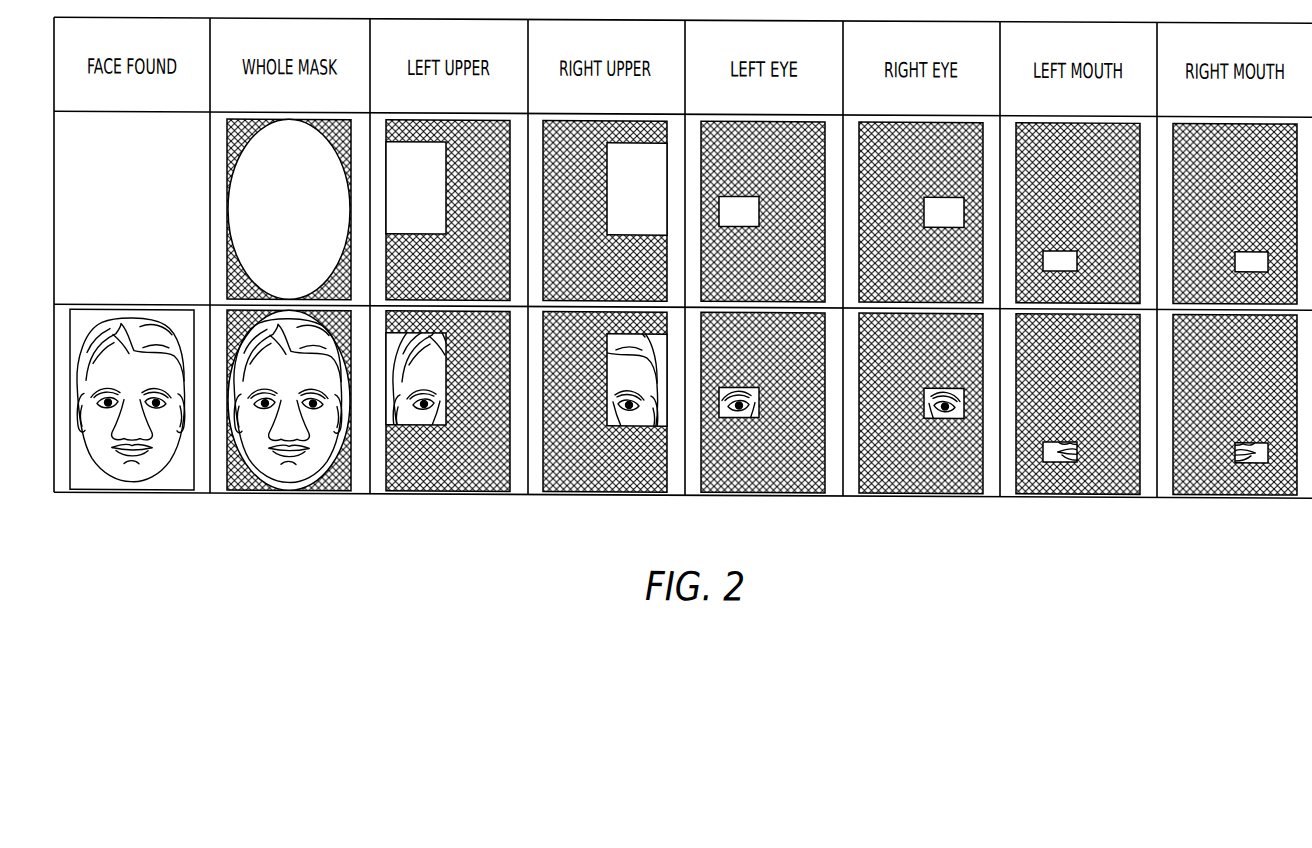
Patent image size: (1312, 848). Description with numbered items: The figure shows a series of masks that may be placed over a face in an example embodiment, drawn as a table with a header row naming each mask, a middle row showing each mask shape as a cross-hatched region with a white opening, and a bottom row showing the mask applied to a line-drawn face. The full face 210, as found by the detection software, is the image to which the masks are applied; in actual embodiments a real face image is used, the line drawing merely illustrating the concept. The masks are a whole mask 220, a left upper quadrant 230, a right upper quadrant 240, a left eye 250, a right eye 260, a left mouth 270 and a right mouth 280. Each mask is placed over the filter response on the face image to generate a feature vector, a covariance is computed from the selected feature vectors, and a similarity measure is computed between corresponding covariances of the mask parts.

The full face 210 is at (90, 467).
The whole mask 220 is at (258, 451).
The left upper quadrant 230 is at (423, 416).
The right upper quadrant 240 is at (632, 415).
The left eye 250 is at (738, 410).
The right eye 260 is at (941, 409).
The left mouth 270 is at (1053, 450).
The right mouth 280 is at (1253, 453).